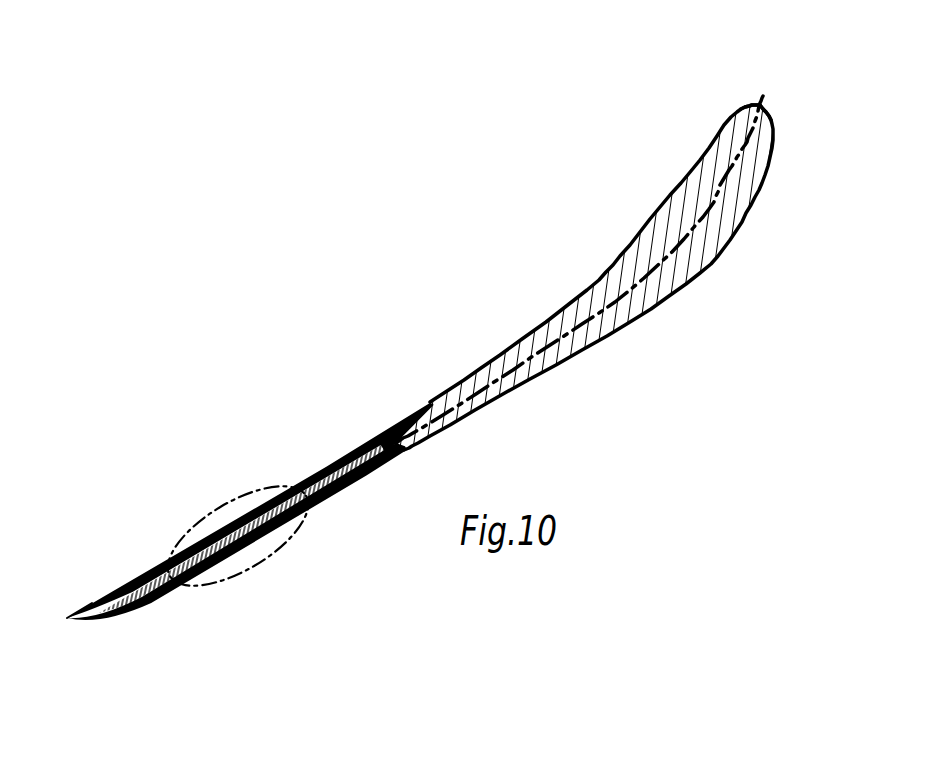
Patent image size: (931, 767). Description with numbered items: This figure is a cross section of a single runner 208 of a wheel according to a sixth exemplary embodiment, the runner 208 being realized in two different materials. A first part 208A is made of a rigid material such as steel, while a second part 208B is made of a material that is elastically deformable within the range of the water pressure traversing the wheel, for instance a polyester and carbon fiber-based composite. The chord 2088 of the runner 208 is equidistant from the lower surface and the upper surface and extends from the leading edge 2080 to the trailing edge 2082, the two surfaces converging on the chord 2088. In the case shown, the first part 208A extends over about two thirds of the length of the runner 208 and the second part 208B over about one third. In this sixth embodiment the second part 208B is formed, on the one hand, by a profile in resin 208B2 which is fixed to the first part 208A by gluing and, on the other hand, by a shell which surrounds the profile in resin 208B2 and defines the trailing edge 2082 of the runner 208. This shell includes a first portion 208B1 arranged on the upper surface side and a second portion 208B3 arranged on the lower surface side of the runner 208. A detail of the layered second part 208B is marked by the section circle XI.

The runner 208 is at (422, 370).
The first part 208A is at (609, 283).
The second part 208B is at (250, 501).
The first portion 208B1 is at (315, 479).
The profile in resin 208B2 is at (330, 464).
The second portion 208B3 is at (358, 453).
The leading edge 2080 is at (759, 104).
The trailing edge 2082 is at (64, 622).
The chord 2088 is at (740, 165).
The detail section XI is at (178, 552).